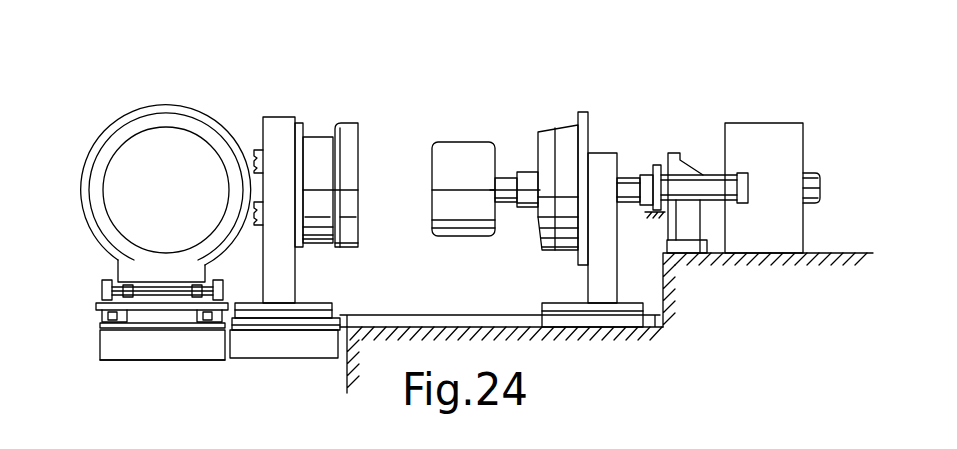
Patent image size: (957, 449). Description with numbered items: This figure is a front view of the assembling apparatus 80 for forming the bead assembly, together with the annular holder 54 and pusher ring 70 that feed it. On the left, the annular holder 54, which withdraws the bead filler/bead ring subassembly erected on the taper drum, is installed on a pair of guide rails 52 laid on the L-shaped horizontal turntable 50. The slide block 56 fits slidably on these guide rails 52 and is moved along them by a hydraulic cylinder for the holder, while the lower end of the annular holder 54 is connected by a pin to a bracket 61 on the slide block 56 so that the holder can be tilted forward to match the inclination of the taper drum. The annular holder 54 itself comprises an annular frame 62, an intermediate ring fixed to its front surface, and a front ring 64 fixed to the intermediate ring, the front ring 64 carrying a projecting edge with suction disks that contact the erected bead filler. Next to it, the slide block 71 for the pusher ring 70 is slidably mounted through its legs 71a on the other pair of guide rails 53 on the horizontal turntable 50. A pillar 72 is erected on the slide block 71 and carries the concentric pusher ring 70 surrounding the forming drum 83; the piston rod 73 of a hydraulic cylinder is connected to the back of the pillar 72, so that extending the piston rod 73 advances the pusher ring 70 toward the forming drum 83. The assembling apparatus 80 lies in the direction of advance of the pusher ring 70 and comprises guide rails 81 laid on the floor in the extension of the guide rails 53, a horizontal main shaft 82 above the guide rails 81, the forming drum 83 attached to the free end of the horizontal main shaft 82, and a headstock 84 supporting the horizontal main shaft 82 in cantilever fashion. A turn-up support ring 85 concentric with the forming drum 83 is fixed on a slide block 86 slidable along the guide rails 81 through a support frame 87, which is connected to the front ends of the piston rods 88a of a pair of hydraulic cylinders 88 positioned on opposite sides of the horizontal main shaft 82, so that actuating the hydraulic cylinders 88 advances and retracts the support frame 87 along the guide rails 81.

The horizontal turntable 50 is at (157, 362).
The guide rails 52 is at (100, 330).
The guide rails 53 is at (333, 330).
The annular holder 54 is at (170, 90).
The slide block 56 is at (96, 306).
The bracket 61 is at (105, 282).
The annular frame 62 is at (80, 190).
The front ring 64 is at (105, 155).
The pusher ring 70 is at (350, 125).
The slide block 71 is at (318, 302).
The legs 71a is at (332, 312).
The pillar 72 is at (282, 122).
The piston rod 73 is at (258, 150).
The assembling apparatus 80 is at (440, 65).
The guide rails 81 is at (435, 313).
The horizontal main shaft 82 is at (512, 175).
The forming drum 83 is at (470, 140).
The headstock 84 is at (756, 112).
The turn-up support ring 85 is at (570, 130).
The slide block 86 is at (553, 305).
The support frame 87 is at (603, 152).
The hydraulic cylinders 88 is at (707, 173).
The piston rods 88a is at (652, 175).